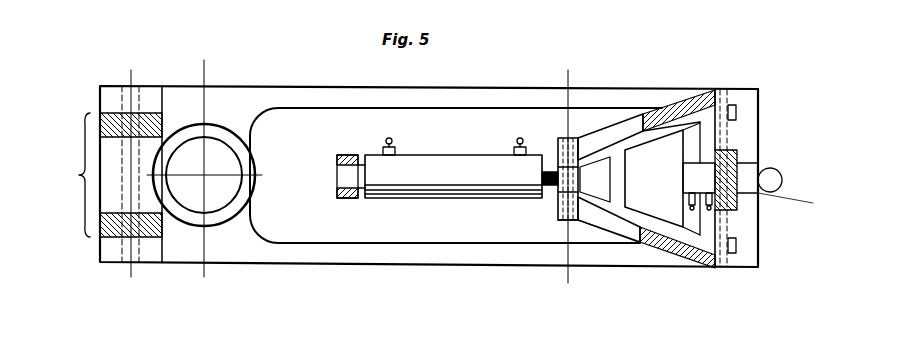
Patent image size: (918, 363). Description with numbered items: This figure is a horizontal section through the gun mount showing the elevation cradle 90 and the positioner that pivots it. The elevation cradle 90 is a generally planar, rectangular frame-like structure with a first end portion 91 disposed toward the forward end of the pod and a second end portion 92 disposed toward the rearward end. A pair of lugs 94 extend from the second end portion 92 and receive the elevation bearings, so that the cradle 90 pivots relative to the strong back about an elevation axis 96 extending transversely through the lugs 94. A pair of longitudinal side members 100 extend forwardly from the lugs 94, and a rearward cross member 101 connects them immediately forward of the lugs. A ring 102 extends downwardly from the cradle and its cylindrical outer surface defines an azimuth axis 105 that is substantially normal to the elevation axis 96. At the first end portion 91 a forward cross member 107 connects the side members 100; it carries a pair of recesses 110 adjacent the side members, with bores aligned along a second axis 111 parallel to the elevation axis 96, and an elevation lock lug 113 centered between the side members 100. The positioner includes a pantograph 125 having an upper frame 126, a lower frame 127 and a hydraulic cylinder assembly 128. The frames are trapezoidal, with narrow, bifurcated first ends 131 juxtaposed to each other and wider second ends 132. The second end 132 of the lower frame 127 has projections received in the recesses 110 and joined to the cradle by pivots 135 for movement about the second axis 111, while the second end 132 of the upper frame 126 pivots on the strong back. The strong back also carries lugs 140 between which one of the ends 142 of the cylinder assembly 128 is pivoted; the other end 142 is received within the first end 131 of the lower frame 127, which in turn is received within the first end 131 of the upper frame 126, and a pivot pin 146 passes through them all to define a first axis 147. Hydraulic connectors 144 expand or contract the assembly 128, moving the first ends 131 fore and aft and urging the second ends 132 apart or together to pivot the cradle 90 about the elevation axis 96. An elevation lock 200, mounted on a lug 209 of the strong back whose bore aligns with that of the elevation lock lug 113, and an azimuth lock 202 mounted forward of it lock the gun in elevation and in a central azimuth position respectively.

The elevation cradle 90 is at (385, 272).
The first end portion 91 is at (738, 90).
The second end portion 92 is at (100, 94).
The lugs 94 is at (68, 175).
The elevation axis 96 is at (130, 75).
The longitudinal side members 100 is at (379, 86).
The rearward cross member 101 is at (184, 85).
The ring 102 is at (235, 127).
The azimuth axis 105 is at (207, 170).
The forward cross member 107 is at (760, 221).
The recesses 110 is at (738, 112).
The second axis 111 is at (718, 79).
The elevation lock lug 113 is at (752, 188).
The pantograph 125 is at (603, 244).
The upper frame 126 is at (627, 112).
The lower frame 127 is at (640, 225).
The hydraulic cylinder assembly 128 is at (420, 206).
The first ends 131 is at (579, 150).
The second ends 132 is at (700, 266).
The pivots 135 is at (730, 145).
The lugs 140 is at (337, 162).
The ends 142 is at (337, 184).
The hydraulic connectors 144 is at (397, 144).
The pivot pin 146 is at (560, 214).
The first axis 147 is at (568, 82).
The elevation lock 200 is at (682, 171).
The azimuth lock 202 is at (783, 180).
The lug 209 is at (740, 170).